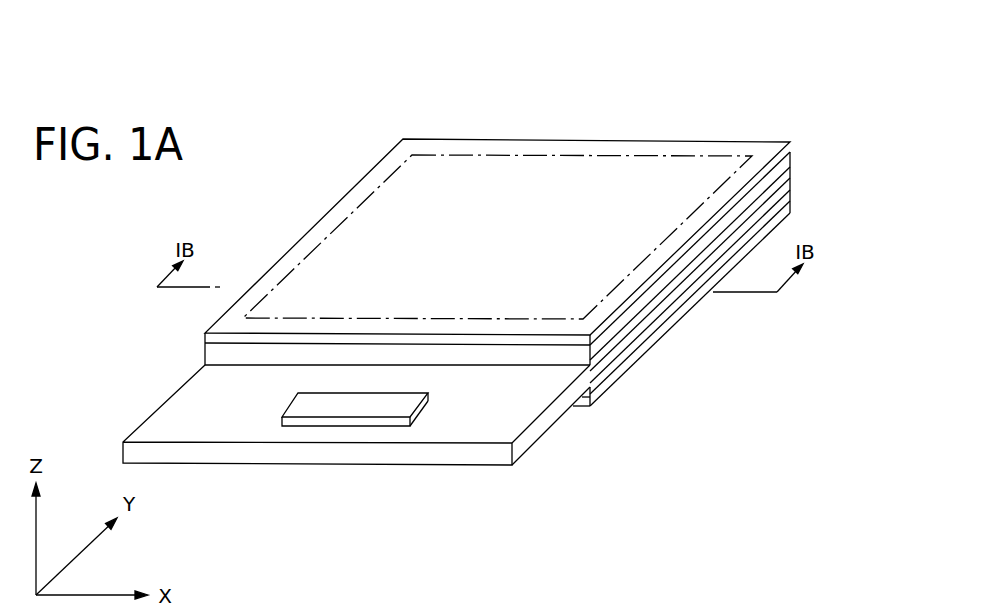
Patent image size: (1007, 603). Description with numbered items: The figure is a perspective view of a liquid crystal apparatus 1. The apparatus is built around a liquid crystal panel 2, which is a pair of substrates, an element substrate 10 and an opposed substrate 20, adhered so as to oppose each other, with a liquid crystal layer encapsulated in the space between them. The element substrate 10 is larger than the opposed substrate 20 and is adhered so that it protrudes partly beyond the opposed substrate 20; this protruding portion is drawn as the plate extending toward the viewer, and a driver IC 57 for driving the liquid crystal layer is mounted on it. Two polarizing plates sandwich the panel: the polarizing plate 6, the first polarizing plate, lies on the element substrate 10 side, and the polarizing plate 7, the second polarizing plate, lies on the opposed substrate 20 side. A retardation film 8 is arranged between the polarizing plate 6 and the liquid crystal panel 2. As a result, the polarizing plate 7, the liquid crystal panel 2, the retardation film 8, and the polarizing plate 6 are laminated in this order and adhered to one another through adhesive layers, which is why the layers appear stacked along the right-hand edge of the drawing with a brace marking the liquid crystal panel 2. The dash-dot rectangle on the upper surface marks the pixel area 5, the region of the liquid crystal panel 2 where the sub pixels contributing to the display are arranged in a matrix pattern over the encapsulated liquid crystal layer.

The liquid crystal apparatus 1 is at (712, 69).
The liquid crystal panel 2 is at (866, 132).
The pixel area 5 is at (536, 155).
The polarizing plate 6 is at (793, 206).
The polarizing plate 7 is at (793, 146).
The retardation film 8 is at (793, 195).
The element substrate 10 is at (793, 181).
The opposed substrate 20 is at (793, 162).
The driver IC 57 is at (343, 405).